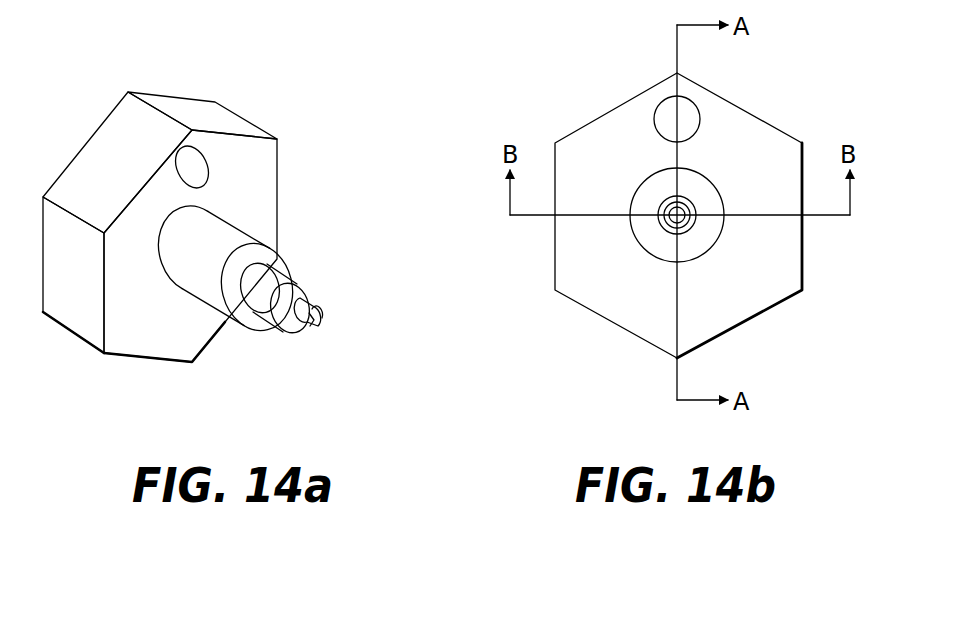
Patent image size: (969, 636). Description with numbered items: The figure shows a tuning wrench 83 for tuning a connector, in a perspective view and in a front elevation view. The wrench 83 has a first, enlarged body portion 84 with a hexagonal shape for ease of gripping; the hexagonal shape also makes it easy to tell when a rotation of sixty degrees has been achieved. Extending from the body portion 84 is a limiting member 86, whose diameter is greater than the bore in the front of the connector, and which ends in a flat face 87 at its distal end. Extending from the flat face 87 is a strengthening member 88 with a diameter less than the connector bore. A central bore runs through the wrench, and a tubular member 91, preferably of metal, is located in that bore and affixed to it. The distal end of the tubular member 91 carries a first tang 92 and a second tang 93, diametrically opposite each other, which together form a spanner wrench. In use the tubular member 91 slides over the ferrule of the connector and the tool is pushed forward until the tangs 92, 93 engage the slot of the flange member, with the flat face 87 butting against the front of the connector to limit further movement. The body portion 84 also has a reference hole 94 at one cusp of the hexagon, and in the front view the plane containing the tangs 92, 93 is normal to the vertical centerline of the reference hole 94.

In FIG. 14b, the tuning wrench 83 is at (644, 185).
In FIG. 14a, the body portion 84 is at (118, 157).
In FIG. 14b, the body portion 84 is at (612, 305).
In FIG. 14a, the limiting member 86 is at (230, 243).
In FIG. 14a, the flat face 87 is at (245, 331).
In FIG. 14a, the strengthening member 88 is at (273, 285).
In FIG. 14a, the tubular member 91 is at (301, 298).
In FIG. 14a, the first tang 92 is at (323, 312).
In FIG. 14b, the first tang 92 is at (657, 218).
In FIG. 14a, the second tang 93 is at (310, 330).
In FIG. 14b, the second tang 93 is at (695, 214).
In FIG. 14a, the reference hole 94 is at (193, 163).
In FIG. 14b, the reference hole 94 is at (664, 123).